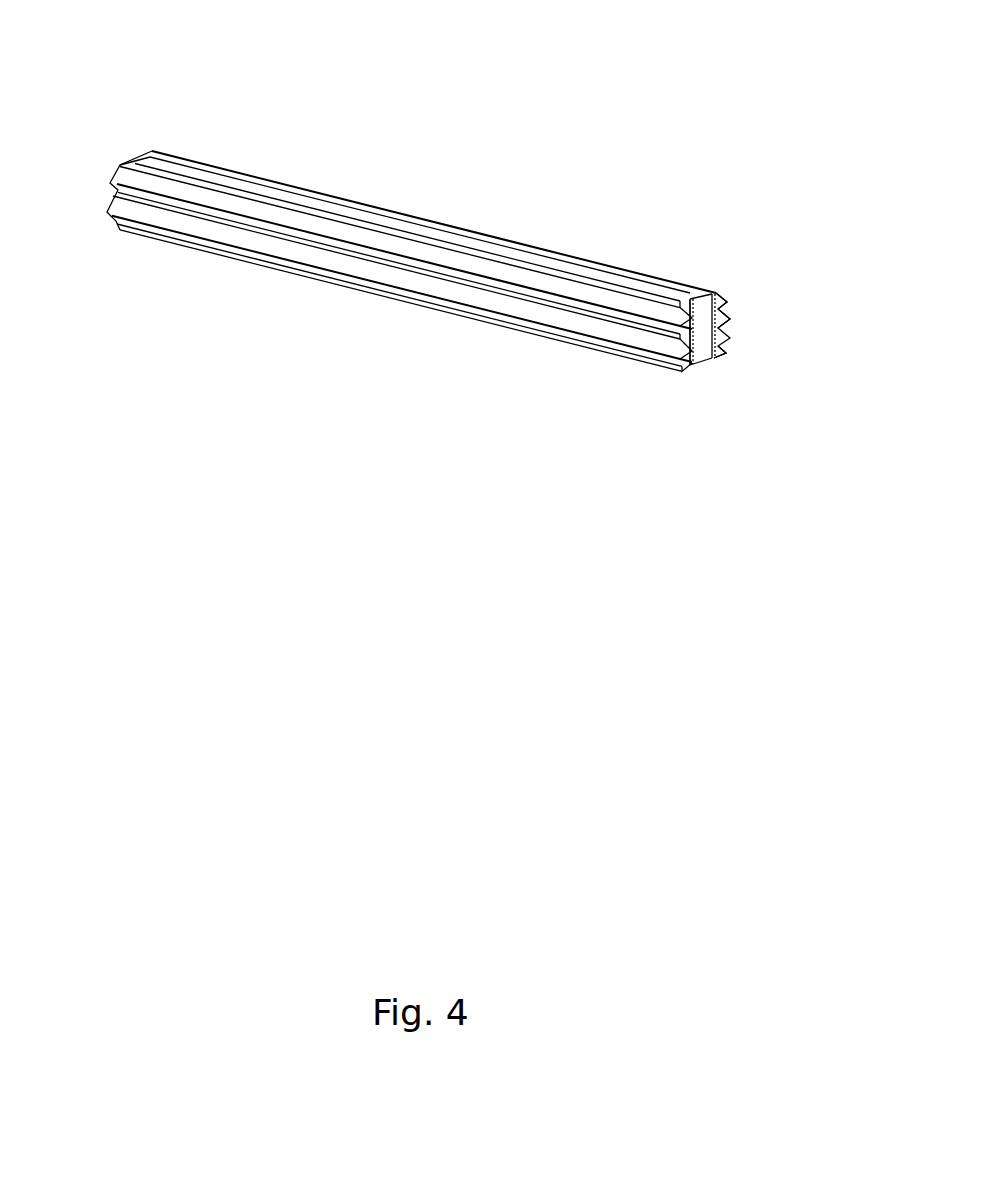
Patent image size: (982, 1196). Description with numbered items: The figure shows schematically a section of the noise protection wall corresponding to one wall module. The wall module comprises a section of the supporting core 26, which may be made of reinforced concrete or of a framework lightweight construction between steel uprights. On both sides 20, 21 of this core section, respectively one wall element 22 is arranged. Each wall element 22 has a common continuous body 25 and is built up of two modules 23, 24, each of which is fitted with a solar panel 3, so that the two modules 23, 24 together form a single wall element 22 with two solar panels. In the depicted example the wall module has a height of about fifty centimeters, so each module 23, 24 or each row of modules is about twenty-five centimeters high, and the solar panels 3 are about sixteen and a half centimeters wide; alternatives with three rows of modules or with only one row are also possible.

The continuous body 25 is at (148, 101).
The solar panel 3 is at (112, 208).
The side 20 is at (690, 363).
The side 21 is at (715, 357).
The wall element 22 is at (747, 293).
The module 23 is at (718, 297).
The module 24 is at (717, 322).
The core 26 is at (700, 347).